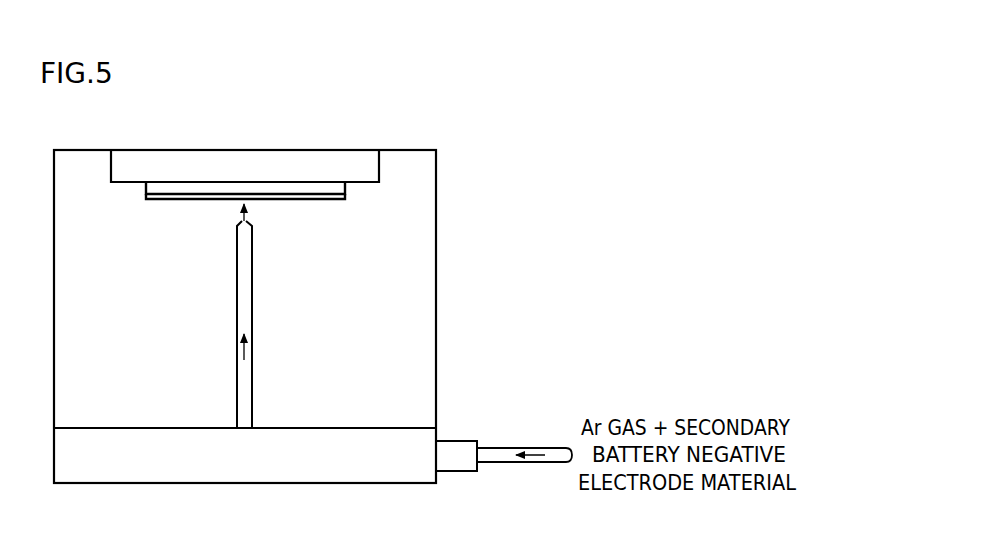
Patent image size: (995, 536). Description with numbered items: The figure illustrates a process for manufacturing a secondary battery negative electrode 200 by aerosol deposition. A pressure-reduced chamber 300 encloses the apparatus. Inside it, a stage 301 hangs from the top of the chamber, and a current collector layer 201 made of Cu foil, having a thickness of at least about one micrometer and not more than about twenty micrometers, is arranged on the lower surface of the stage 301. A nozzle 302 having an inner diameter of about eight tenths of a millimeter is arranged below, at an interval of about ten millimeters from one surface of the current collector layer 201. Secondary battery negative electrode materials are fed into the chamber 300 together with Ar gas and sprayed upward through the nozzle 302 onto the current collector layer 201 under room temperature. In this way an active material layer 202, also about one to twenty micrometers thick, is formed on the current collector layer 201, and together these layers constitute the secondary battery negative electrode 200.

The pressure-reduced chamber 300 is at (556, 162).
The stage 301 is at (368, 166).
The current collector layer 201 is at (340, 188).
The active material layer 202 is at (342, 198).
The secondary battery negative electrode 200 is at (513, 178).
The nozzle 302 is at (252, 318).